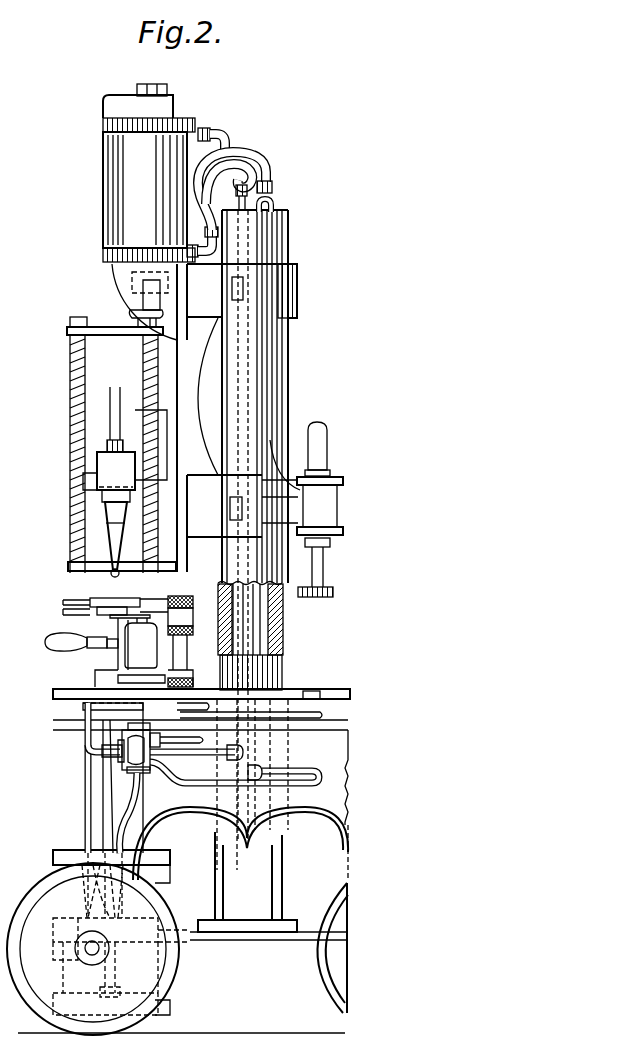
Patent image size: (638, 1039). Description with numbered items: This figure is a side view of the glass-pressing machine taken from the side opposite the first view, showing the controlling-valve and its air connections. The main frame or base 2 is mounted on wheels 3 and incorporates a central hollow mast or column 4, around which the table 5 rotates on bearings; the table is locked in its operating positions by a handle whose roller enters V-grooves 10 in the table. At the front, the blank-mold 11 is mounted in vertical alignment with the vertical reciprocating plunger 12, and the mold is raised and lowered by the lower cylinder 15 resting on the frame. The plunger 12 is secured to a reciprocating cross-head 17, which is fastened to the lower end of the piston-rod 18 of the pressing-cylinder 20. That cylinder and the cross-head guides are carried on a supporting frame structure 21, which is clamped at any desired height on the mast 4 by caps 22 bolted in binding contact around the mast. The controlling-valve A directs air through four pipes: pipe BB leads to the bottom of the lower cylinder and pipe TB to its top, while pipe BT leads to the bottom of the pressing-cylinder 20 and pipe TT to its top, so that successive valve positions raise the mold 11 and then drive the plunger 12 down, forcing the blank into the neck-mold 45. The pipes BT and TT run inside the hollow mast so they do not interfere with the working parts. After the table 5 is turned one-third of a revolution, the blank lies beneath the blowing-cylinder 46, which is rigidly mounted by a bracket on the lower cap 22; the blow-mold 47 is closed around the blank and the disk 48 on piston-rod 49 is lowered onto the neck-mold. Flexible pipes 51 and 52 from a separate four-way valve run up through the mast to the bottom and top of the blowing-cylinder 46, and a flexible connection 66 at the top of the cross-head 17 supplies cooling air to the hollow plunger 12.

The main frame or base 2 is at (183, 866).
The wheels 3 is at (27, 909).
The mast or column 4 is at (284, 640).
The table 5 is at (320, 691).
The V-grooves 10 is at (310, 690).
The blank-mold 11 is at (85, 744).
The plunger 12 is at (115, 538).
The cylinder 15 is at (158, 873).
The cross-head 17 is at (140, 462).
The piston-rod 18 is at (142, 302).
The pressing-cylinder 20 is at (149, 173).
The supporting frame structure 21 is at (204, 418).
The caps 22 is at (294, 297).
The neck-mold 45 is at (100, 599).
The blowing-cylinder 46 is at (302, 478).
The blow-mold 47 is at (118, 650).
The disk 48 is at (312, 597).
The piston-rod 49 is at (323, 569).
The pipe 51 is at (252, 420).
The pipe 52 is at (276, 365).
The connections 66 is at (113, 407).
The pipe T T TT is at (214, 129).
The pipe B T BT is at (264, 163).
The pipe B B BB is at (88, 807).
The pipe T B TB is at (130, 806).
The valve A is at (131, 759).